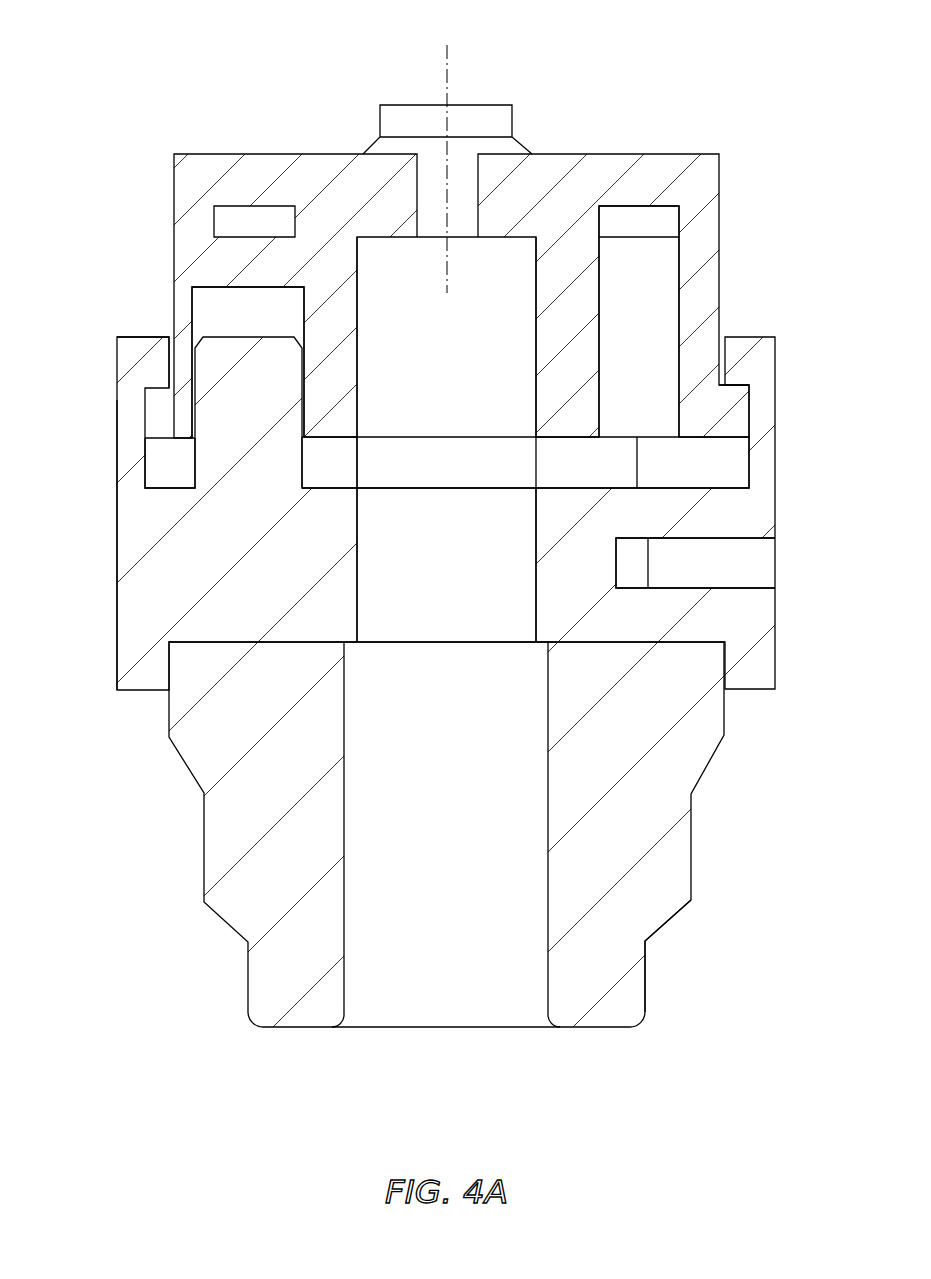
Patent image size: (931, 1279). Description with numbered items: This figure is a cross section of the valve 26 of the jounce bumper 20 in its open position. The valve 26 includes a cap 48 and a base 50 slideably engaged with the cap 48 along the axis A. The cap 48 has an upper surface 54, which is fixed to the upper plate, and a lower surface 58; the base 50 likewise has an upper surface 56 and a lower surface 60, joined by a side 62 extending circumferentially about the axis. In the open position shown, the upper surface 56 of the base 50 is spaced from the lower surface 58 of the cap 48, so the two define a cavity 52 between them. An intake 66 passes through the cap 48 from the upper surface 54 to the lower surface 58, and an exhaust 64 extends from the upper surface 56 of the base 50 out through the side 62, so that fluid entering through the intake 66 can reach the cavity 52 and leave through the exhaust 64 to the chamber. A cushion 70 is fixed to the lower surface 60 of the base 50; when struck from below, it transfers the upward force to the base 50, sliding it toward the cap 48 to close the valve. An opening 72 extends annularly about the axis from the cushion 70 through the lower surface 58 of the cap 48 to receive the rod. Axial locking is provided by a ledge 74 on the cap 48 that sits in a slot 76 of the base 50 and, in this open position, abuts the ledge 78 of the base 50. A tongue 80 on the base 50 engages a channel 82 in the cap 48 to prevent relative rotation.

The jounce bumper 20 is at (131, 74).
The valve 26 is at (114, 408).
The cap 48 is at (173, 187).
The base 50 is at (117, 553).
The cavity 52 is at (711, 459).
The upper surface 54 is at (652, 154).
The upper surface 56 is at (572, 488).
The lower surface 58 is at (572, 437).
The lower surface 60 is at (650, 642).
The side 62 is at (168, 565).
The exhaust 64 is at (711, 567).
The intake 66 is at (397, 105).
The cushion 70 is at (669, 921).
The opening 72 is at (486, 982).
The ledge 74 is at (167, 438).
The slot 76 is at (167, 474).
The ledge 78 is at (132, 336).
The tongue 80 is at (302, 453).
The channel 82 is at (264, 313).